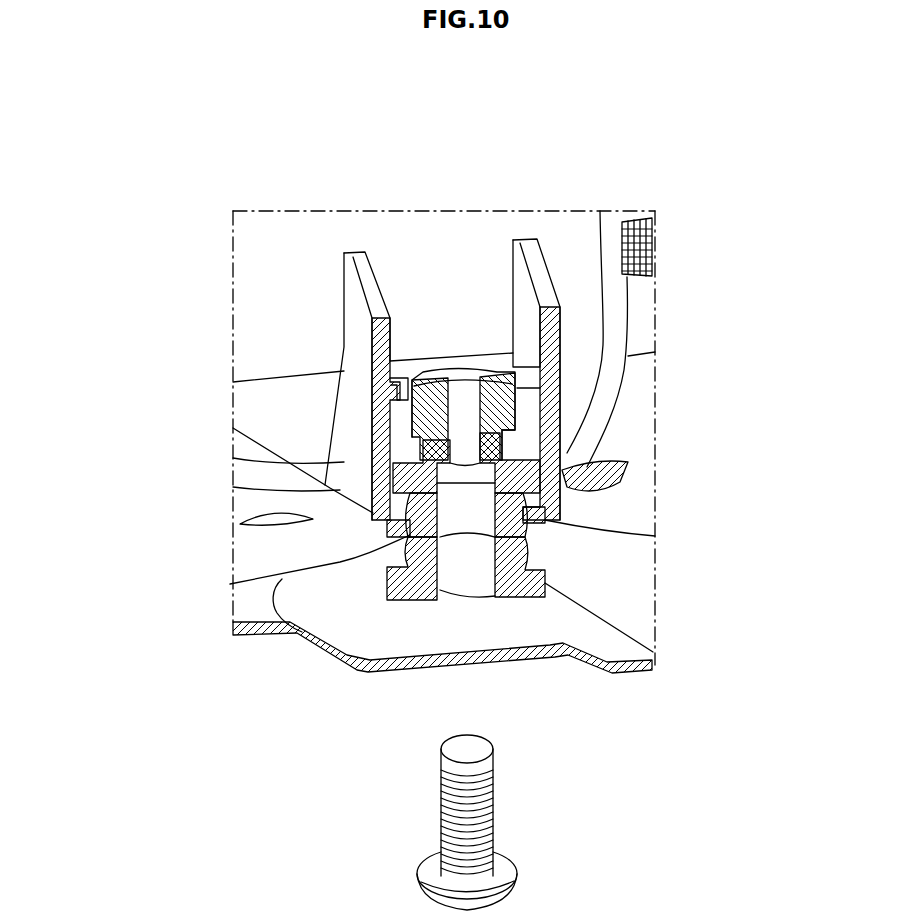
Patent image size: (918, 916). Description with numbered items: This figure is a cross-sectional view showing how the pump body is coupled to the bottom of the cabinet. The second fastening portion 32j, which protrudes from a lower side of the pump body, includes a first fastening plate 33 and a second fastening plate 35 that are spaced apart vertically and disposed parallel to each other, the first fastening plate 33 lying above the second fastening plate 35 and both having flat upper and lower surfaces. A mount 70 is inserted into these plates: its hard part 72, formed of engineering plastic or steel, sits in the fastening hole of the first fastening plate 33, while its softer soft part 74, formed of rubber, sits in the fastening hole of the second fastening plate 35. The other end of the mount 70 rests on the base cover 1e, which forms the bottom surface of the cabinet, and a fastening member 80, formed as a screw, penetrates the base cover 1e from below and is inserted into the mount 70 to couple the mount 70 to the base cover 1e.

The first fastening plate 33 is at (494, 355).
The hard part 72 is at (518, 390).
The soft part 74 is at (523, 530).
The mount 70 is at (553, 560).
The second fastening plate 35 is at (330, 567).
The second fastening portion 32j is at (347, 456).
The base cover 1e is at (367, 673).
The fastening member 80 is at (490, 828).